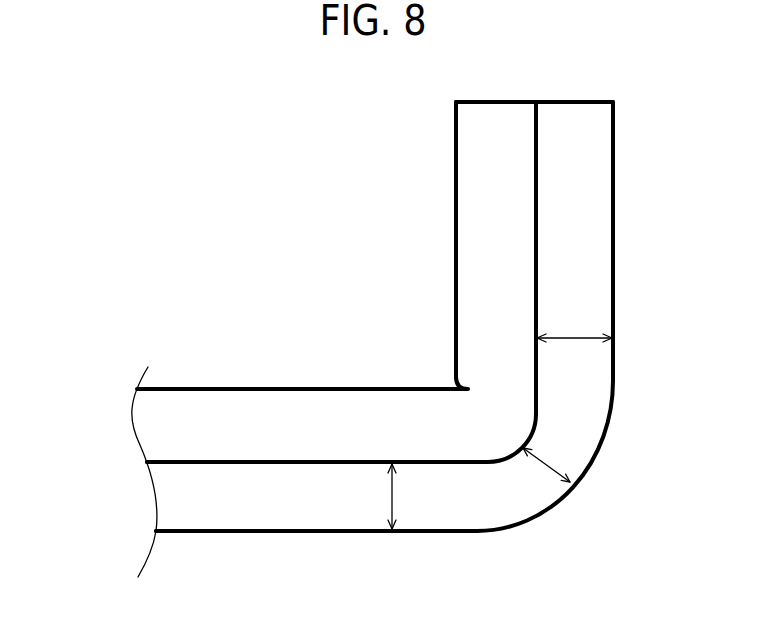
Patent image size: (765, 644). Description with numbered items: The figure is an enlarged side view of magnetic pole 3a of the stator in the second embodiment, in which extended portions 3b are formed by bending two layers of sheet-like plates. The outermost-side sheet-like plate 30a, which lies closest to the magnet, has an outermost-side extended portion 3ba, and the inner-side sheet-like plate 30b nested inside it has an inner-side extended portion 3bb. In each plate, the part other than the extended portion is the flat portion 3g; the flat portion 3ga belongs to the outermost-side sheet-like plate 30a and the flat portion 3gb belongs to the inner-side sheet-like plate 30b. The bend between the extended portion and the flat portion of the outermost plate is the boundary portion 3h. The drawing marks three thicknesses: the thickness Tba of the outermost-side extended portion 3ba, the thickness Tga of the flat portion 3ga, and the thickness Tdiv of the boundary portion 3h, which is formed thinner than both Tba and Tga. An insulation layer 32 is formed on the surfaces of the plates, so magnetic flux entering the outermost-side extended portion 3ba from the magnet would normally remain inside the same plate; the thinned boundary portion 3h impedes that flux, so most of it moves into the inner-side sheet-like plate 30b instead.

The magnetic pole 3a is at (408, 377).
The outermost-side sheet-like plate 30a is at (582, 115).
The inner-side sheet-like plate 30b is at (489, 115).
The extended portion 3b is at (618, 103).
The outermost-side extended portion 3ba is at (598, 230).
The inner-side extended portion 3bb is at (493, 230).
The thickness of outermost-side extended portion Tba is at (573, 338).
The thickness of boundary portion Tdiv is at (523, 448).
The thickness of flat portion Tga is at (392, 466).
The flat portion 3g is at (465, 541).
The flat portion of outermost-side sheet-like plate 3ga is at (288, 487).
The flat portion of inner-side sheet-like plate 3gb is at (211, 438).
The boundary portion 3h is at (617, 408).
The insulation layer 32 is at (175, 527).